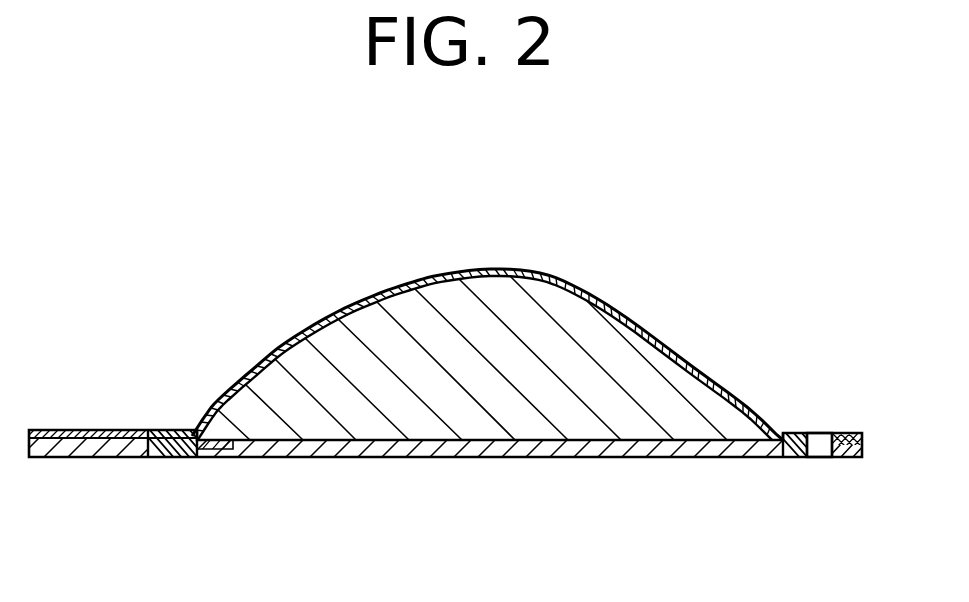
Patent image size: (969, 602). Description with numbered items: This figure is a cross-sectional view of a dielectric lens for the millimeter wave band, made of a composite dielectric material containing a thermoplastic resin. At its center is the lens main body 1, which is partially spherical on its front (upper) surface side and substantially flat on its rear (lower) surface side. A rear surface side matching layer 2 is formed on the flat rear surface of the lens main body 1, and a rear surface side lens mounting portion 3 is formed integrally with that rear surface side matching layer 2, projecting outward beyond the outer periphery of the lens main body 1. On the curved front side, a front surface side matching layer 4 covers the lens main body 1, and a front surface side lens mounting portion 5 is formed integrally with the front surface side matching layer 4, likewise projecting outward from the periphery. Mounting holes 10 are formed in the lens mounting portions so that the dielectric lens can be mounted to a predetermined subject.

The lens main body 1 is at (573, 325).
The rear surface side matching layer 2 is at (502, 458).
The rear surface side lens mounting portion 3 is at (67, 458).
The front surface side matching layer 4 is at (367, 297).
The front surface side lens mounting portion 5 is at (67, 430).
The mounting holes 10 is at (822, 445).